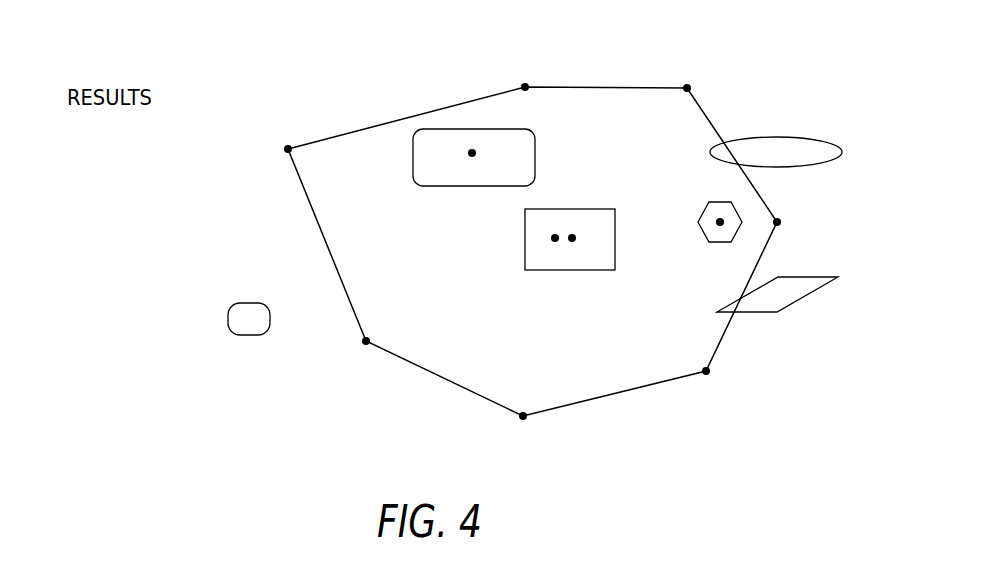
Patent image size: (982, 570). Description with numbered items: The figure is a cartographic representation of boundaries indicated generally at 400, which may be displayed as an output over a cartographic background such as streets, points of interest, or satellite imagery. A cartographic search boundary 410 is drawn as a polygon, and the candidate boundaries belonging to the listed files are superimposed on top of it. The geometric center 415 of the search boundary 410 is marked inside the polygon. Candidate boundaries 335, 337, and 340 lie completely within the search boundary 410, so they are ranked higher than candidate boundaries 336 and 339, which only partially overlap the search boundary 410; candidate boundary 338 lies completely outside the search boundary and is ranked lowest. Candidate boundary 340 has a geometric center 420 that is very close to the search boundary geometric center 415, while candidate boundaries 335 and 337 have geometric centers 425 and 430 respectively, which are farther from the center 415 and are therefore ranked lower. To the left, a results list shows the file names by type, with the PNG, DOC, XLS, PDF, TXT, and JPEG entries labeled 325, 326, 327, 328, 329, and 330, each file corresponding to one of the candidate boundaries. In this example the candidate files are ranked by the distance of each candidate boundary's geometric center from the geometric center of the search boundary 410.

The cartographic representation of boundaries 400 is at (737, 42).
The cartographic search boundary 410 is at (607, 88).
The DOC file type 325 is at (62, 152).
The PDF file type 326 is at (62, 209).
The XLS file type 327 is at (62, 265).
The JPEG file type 328 is at (62, 320).
The TXT file type 329 is at (62, 377).
The PNG file type 330 is at (62, 434).
The candidate boundary 335 is at (497, 129).
The candidate boundary 336 is at (805, 140).
The candidate boundary 337 is at (741, 212).
The candidate boundary 338 is at (250, 303).
The candidate boundary 339 is at (813, 277).
The candidate boundary 340 is at (585, 209).
The geometric center of the search boundary 415 is at (555, 243).
The geometric center of candidate boundary 340 420 is at (572, 243).
The geometric center of candidate boundary 335 425 is at (472, 157).
The geometric center of candidate boundary 337 430 is at (720, 236).